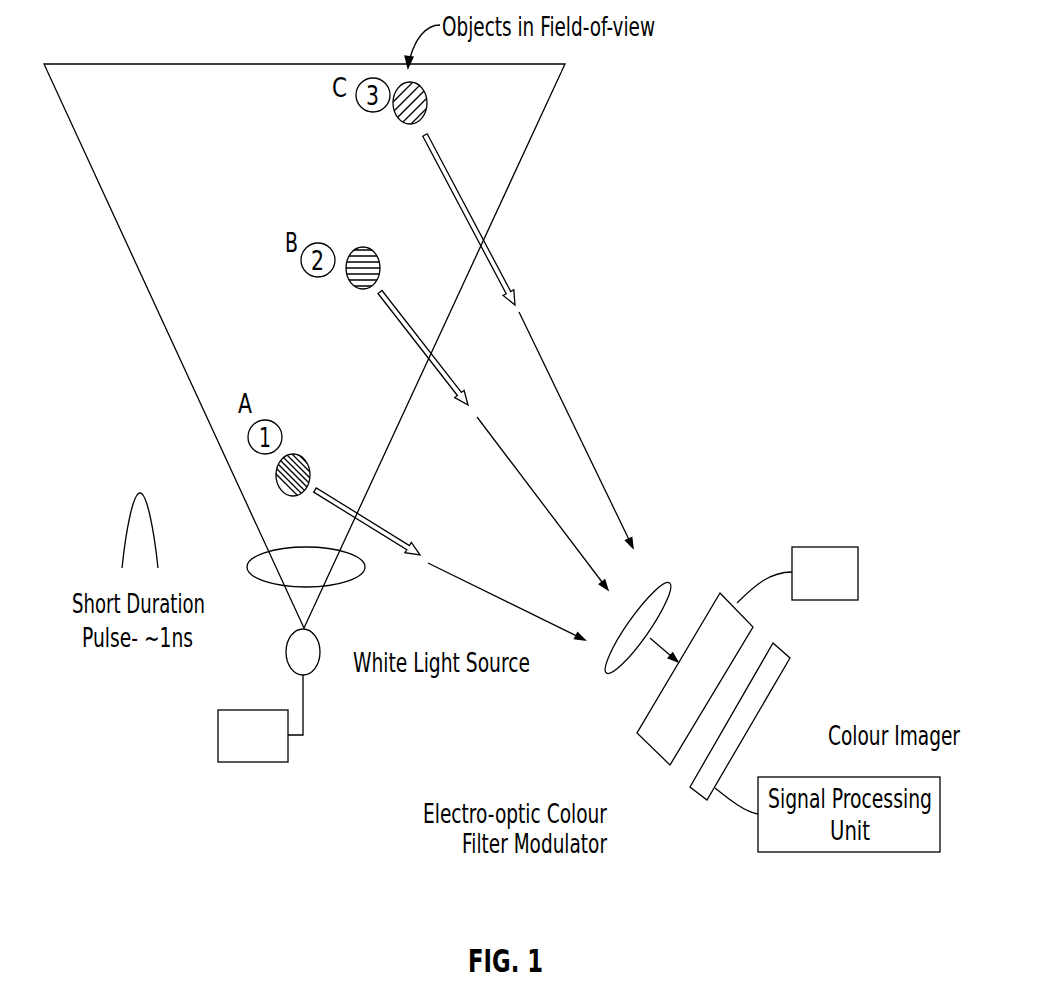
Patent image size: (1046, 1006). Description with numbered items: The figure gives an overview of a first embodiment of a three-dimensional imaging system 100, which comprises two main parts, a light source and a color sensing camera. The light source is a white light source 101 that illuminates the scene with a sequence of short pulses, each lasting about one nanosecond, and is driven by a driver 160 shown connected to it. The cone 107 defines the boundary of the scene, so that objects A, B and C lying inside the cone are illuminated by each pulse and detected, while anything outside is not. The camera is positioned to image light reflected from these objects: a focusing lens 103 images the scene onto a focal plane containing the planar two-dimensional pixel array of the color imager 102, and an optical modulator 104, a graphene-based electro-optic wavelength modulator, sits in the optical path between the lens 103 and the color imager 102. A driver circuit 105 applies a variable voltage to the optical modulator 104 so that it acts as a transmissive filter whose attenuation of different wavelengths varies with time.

The 3D imaging system 100 is at (636, 333).
The white light source 101 is at (321, 650).
The color imager 102 is at (780, 670).
The focusing lens 103 is at (667, 585).
The optical modulator 104 is at (647, 760).
The driver circuit 105 is at (822, 547).
The cone 107 is at (162, 322).
The driver 160 is at (254, 763).